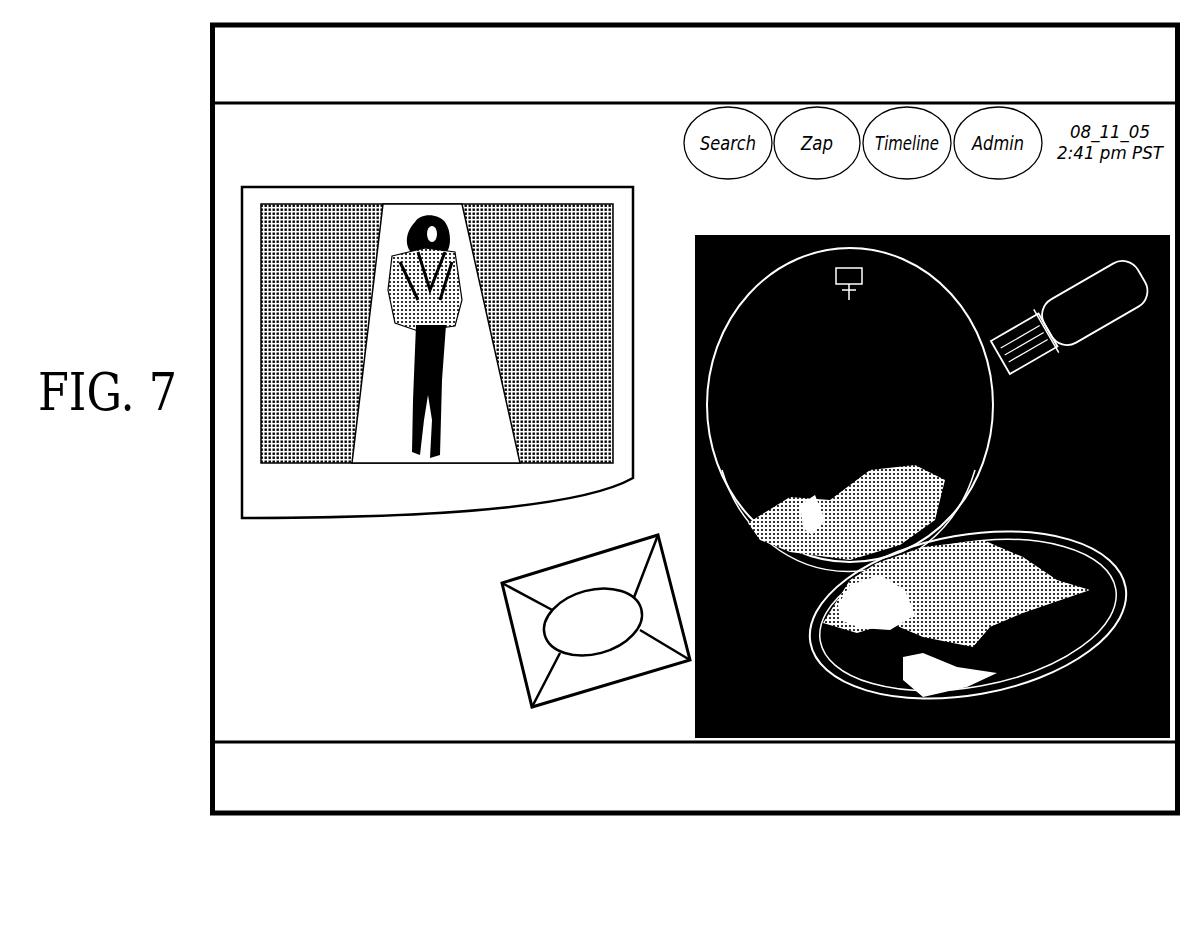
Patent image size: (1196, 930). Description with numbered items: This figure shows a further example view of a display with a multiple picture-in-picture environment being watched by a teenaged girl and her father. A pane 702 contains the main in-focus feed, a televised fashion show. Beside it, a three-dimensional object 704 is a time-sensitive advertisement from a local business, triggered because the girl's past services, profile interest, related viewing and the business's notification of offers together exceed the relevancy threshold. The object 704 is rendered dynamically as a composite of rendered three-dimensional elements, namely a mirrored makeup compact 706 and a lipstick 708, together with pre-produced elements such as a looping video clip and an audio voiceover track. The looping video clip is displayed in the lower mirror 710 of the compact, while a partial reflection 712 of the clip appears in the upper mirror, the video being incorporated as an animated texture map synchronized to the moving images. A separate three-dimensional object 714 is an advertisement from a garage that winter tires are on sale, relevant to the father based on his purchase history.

The pane 702 is at (373, 187).
The 3D object 704 is at (932, 458).
The mirrored makeup compact 706 is at (985, 433).
The lipstick 708 is at (1093, 348).
The lower mirror 710 is at (808, 625).
The partial reflection 712 is at (893, 533).
The 3D object 714 is at (465, 583).